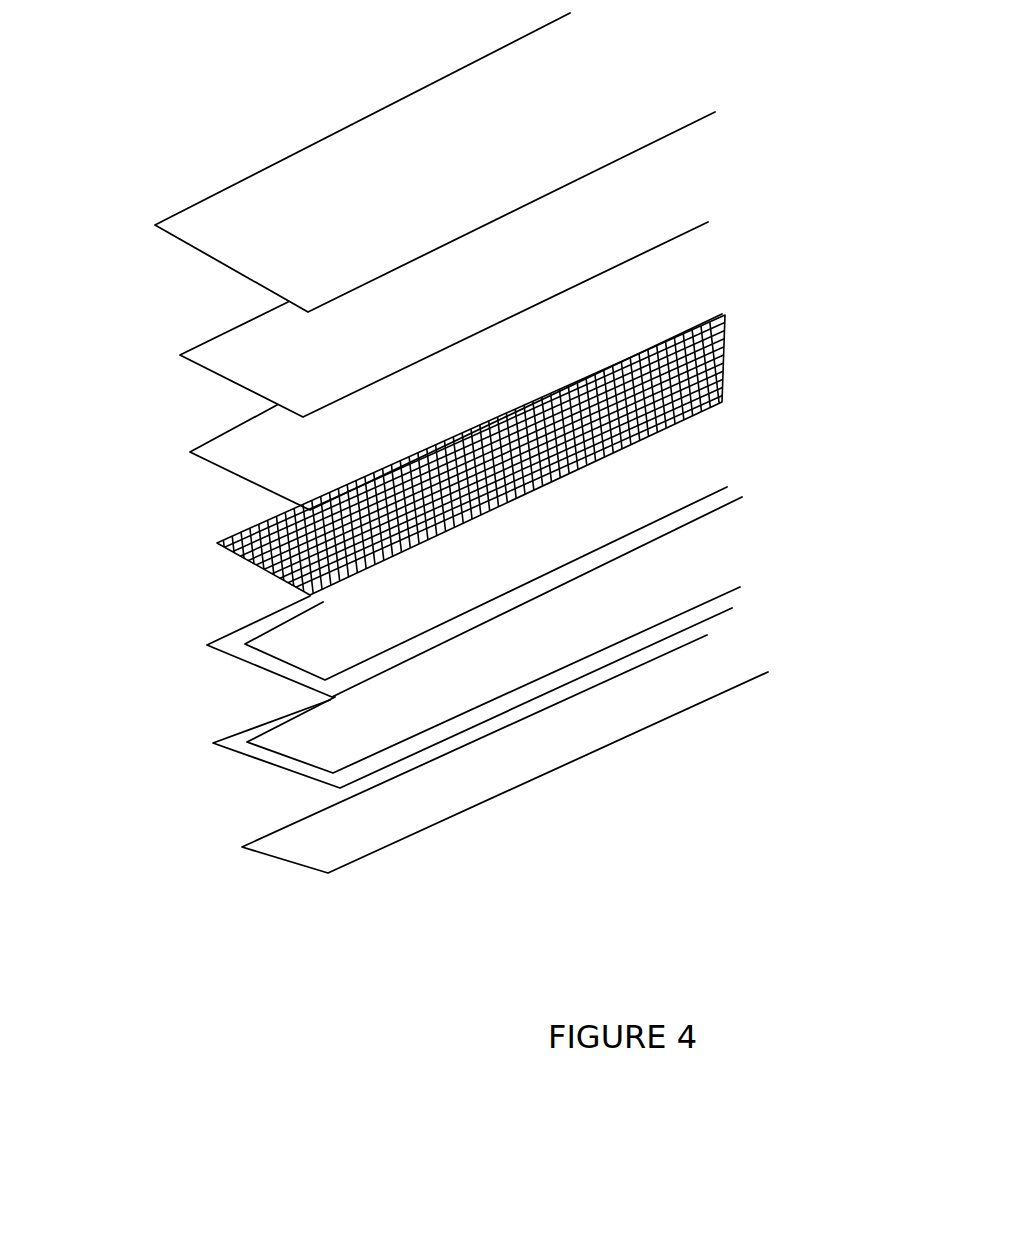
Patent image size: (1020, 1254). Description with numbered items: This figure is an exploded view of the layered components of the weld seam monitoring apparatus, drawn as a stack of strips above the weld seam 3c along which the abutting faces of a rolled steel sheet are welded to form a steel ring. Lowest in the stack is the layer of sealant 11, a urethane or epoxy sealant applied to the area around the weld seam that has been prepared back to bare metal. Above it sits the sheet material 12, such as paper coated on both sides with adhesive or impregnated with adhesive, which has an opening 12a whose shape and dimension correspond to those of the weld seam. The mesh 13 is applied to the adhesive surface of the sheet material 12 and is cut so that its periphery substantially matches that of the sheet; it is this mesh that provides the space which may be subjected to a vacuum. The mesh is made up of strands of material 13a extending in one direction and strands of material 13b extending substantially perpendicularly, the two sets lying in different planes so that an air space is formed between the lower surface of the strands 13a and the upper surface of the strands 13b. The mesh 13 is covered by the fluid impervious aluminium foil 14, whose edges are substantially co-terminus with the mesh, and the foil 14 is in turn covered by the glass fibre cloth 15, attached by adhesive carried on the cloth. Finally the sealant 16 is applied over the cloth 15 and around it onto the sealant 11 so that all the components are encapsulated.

The sealant 16 is at (187, 215).
The glass fibre cloth 15 is at (220, 347).
The aluminium foil 14 is at (215, 450).
The mesh 13 is at (230, 570).
The strands of material 13a is at (215, 552).
The strands of material 13b is at (223, 535).
The sheet material 12 is at (253, 670).
The opening 12a is at (267, 640).
The sealant 11 is at (242, 747).
The weld seam 3c is at (383, 827).